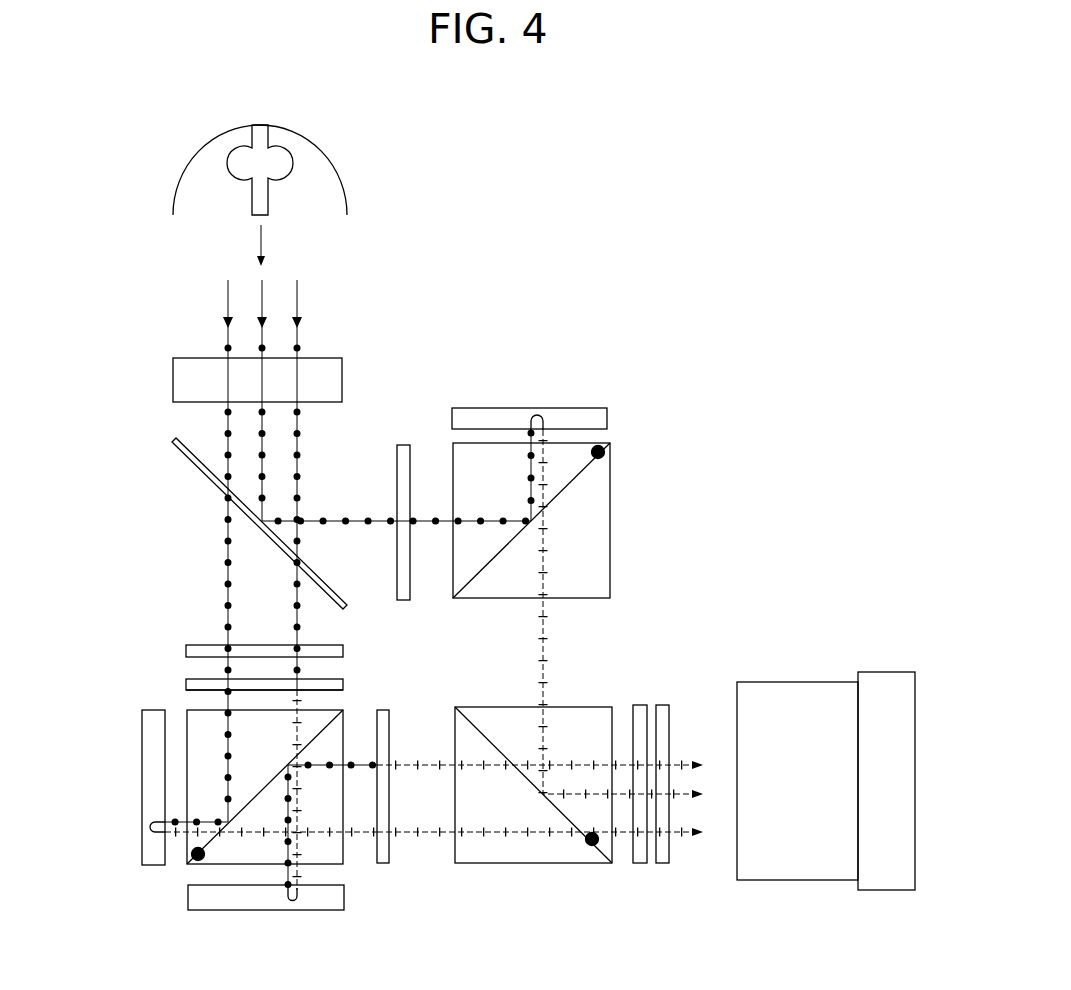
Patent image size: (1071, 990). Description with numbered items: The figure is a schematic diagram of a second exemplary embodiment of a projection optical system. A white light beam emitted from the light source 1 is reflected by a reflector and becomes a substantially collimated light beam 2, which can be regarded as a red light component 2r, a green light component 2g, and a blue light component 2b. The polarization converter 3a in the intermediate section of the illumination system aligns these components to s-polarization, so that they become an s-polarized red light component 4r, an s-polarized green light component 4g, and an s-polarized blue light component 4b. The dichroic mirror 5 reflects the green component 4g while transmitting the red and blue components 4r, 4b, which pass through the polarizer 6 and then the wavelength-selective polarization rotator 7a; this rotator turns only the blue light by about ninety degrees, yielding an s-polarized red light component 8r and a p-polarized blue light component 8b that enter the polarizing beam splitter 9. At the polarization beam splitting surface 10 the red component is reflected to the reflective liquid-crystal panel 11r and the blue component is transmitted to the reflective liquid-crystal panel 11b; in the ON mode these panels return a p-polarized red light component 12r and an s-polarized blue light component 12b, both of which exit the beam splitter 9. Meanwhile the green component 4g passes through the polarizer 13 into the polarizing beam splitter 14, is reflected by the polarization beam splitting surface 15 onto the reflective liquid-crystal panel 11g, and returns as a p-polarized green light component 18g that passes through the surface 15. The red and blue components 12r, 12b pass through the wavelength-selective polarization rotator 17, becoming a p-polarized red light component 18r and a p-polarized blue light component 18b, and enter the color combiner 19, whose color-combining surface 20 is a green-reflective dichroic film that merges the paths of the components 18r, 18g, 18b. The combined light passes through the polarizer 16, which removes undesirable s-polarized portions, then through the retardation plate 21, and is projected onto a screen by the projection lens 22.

The light source 1 is at (338, 166).
The collimated light beam 2 is at (261, 243).
The red light component 2r is at (228, 294).
The green light component 2g is at (262, 292).
The blue light component 2b is at (297, 305).
The polarization converter 3a is at (183, 380).
The s-polarized red light component 4r is at (228, 433).
The s-polarized green light component 4g is at (262, 433).
The s-polarized blue light component 4b is at (297, 440).
The dichroic mirror 5 is at (173, 453).
The polarizer 6 is at (195, 645).
The wavelength-selective polarization rotator 7a is at (190, 680).
The s-polarized red light component 8r is at (228, 722).
The p-polarized blue light component 8b is at (293, 700).
The polarizing beam splitter 9 is at (198, 722).
The polarization beam splitting surface 10 is at (198, 862).
The reflective liquid-crystal panel 11r is at (143, 790).
The reflective liquid-crystal panel 11g is at (508, 418).
The reflective liquid-crystal panel 11b is at (265, 910).
The p-polarized red light component 12r is at (362, 836).
The s-polarized blue light component 12b is at (363, 760).
The polarizer 13 is at (402, 445).
The polarizing beam splitter 14 is at (453, 577).
The polarization beam splitting surface 15 is at (601, 447).
The polarizer 16 is at (633, 855).
The wavelength-selective polarization rotator 17 is at (392, 838).
The p-polarized red light component 18r is at (402, 840).
The p-polarized green light component 18g is at (547, 580).
The p-polarized blue light component 18b is at (408, 763).
The color combiner 19 is at (485, 850).
The color-combining surface 20 is at (592, 843).
The retardation plate 21 is at (668, 855).
The projection lens 22 is at (806, 688).